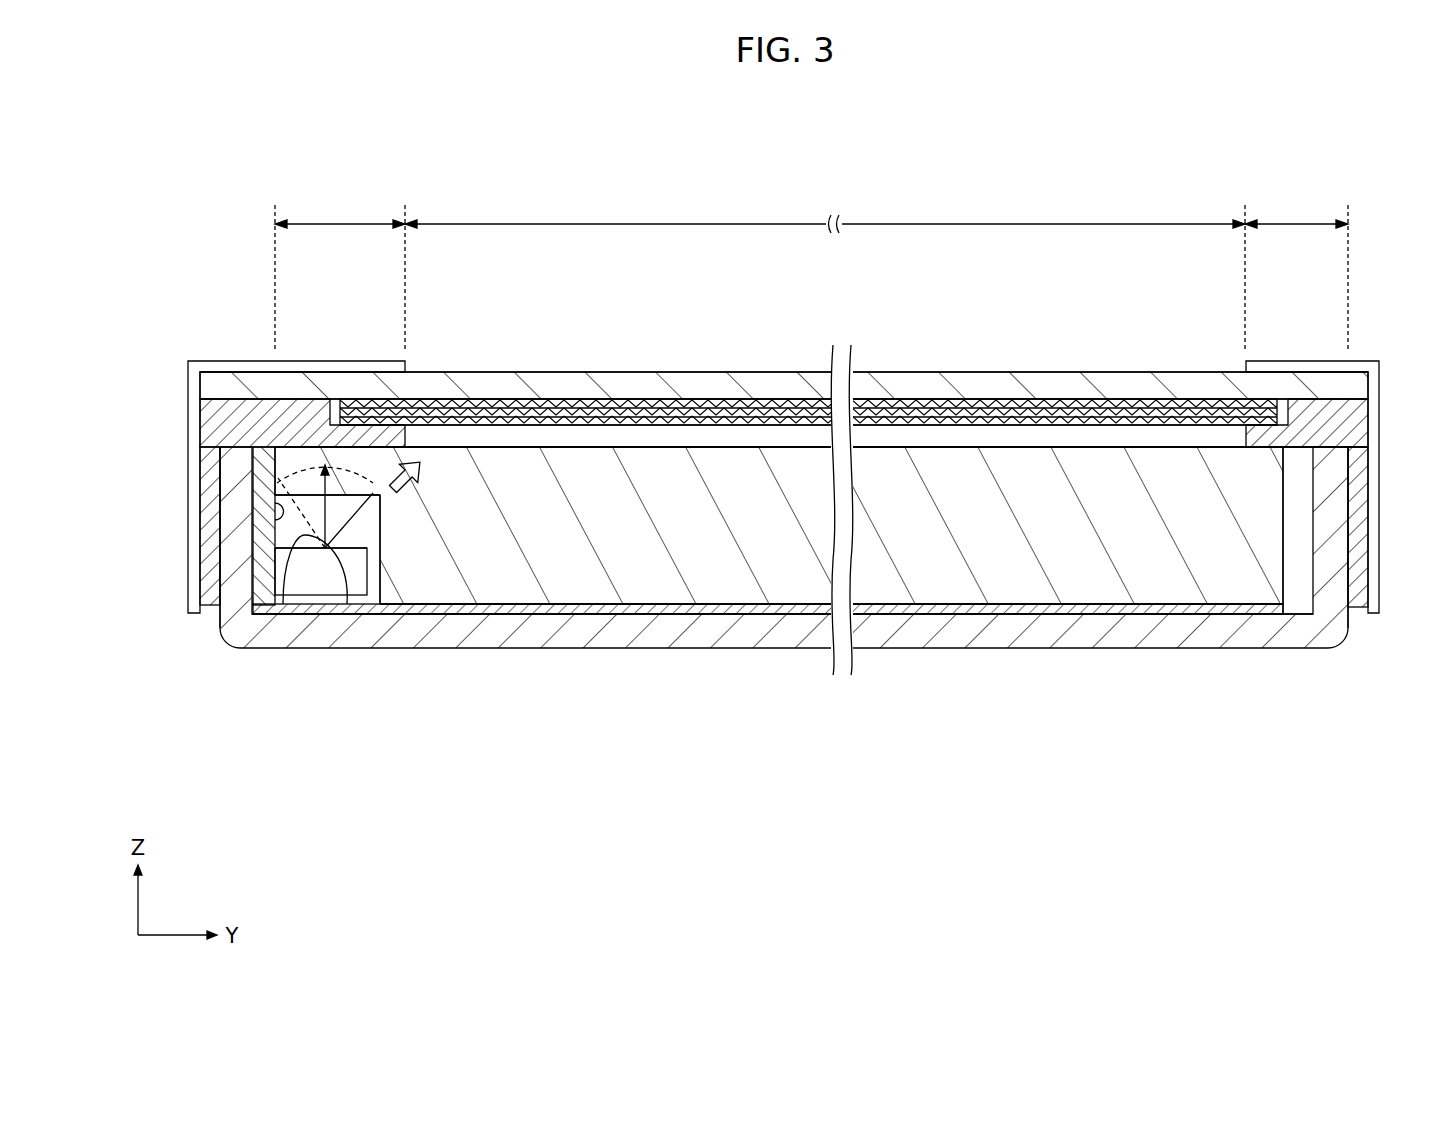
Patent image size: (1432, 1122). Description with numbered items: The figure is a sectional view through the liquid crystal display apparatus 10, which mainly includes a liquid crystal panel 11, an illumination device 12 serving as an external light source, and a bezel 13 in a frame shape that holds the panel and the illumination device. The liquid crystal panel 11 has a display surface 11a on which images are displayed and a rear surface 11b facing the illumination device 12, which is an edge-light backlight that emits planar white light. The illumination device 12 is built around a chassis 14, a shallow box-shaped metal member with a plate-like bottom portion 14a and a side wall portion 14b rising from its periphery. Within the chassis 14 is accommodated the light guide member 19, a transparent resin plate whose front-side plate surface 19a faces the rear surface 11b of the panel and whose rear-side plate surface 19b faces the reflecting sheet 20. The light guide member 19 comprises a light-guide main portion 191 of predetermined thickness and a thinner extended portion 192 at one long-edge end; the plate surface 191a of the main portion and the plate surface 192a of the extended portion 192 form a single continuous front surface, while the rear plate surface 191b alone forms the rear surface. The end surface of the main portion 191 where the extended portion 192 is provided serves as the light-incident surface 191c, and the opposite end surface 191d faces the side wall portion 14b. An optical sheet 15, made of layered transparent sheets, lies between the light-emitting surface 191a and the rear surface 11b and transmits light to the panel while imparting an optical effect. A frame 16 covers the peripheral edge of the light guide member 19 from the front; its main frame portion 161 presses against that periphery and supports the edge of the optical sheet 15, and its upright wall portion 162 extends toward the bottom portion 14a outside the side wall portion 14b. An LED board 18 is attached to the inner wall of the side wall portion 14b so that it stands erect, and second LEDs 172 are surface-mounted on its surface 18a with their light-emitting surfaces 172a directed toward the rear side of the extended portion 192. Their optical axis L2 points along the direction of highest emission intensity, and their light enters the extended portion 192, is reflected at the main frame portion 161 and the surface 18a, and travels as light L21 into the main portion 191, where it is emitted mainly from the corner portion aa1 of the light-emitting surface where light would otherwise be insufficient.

The liquid crystal display apparatus 10 is at (1172, 160).
The liquid crystal panel 11 is at (784, 355).
The display surface 11a is at (982, 372).
The rear surface 11b is at (1049, 399).
The illumination device 12 is at (978, 692).
The bezel 13 is at (1357, 362).
The chassis 14 is at (756, 578).
The bottom portion 14a is at (699, 633).
The side wall portion 14b is at (237, 585).
The optical sheet 15 is at (640, 412).
The frame 16 is at (735, 502).
The main frame portion 161 is at (233, 418).
The upright wall portion 162 is at (210, 515).
The LED board 18 is at (197, 578).
The surface of LED board 18a is at (282, 517).
The light guide member 19 is at (741, 514).
The front-side plate surface 19a is at (821, 379).
The rear-side plate surface 19b is at (831, 669).
The light-guide main portion 191 is at (821, 523).
The plate surface of light-guide main portion 191a is at (497, 447).
The rear plate surface of light-guide main portion 191b is at (778, 614).
The light-incident surface 191c is at (372, 606).
The end surface 191d is at (1285, 580).
The extended portion 192 is at (247, 394).
The plate surface of extended portion 192a is at (335, 492).
The reflecting sheet 20 is at (1100, 610).
The second LEDs 172 is at (299, 637).
The light-emitting surfaces 172a is at (300, 596).
The optical axis L2 is at (347, 606).
The light L21 is at (415, 488).
The corner portion aa1 is at (427, 449).